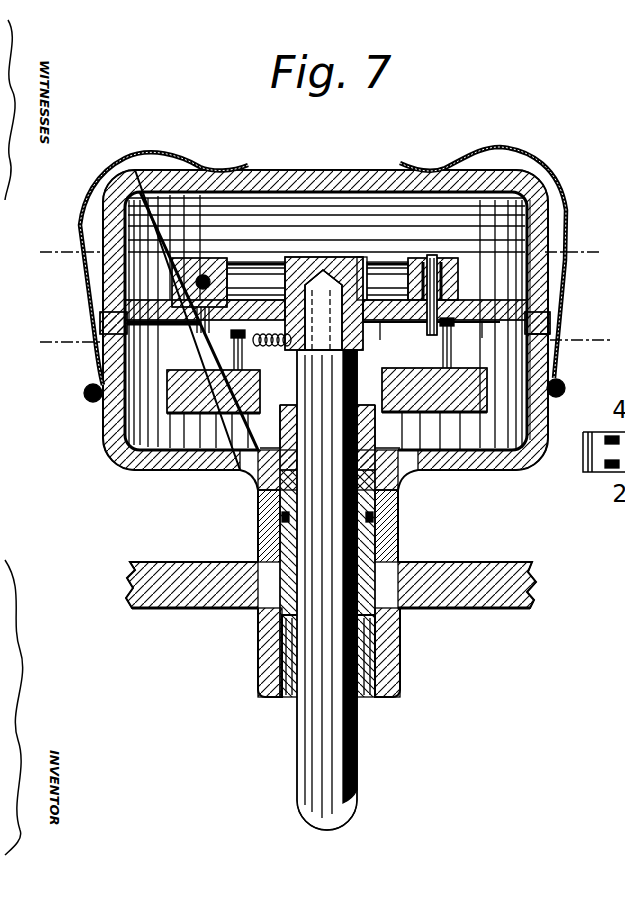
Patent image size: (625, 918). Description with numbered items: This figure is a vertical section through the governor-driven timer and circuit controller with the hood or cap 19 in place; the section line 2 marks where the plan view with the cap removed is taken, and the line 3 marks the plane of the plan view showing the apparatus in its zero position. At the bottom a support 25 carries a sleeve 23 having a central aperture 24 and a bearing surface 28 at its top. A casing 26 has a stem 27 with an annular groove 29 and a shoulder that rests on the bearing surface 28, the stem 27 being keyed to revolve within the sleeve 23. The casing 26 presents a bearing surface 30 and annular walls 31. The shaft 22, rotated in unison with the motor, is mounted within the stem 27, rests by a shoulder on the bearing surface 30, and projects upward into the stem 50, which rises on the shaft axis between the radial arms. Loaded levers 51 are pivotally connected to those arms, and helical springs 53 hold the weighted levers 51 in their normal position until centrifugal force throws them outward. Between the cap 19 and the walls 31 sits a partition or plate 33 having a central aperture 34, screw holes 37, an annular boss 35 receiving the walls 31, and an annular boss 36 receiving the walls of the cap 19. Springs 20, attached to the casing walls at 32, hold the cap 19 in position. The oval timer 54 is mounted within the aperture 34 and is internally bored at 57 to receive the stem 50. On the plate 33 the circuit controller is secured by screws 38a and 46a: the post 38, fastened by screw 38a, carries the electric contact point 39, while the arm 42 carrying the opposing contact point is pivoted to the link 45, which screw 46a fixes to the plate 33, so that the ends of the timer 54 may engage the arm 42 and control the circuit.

The section line 2 2 is at (316, 252).
The section line 3 is at (320, 339).
The hood or cap 19 is at (320, 170).
The springs 20 is at (133, 155).
The shaft 22 is at (358, 760).
The sleeve 23 is at (400, 672).
The central aperture 24 is at (366, 690).
The support 25 is at (156, 610).
The casing 26 is at (463, 470).
The stem 27 is at (370, 555).
The bearing surface 28 is at (400, 500).
The annular groove 29 is at (280, 518).
The bearing surface 30 is at (377, 455).
The annular walls 31 is at (548, 410).
The spring attachment point 32 is at (86, 402).
The partition or plate 33 is at (477, 342).
The central aperture 34 is at (383, 342).
The annular boss 35 is at (550, 344).
The annular boss 36 is at (102, 320).
The screw holes 37 is at (232, 338).
The post 38 is at (206, 272).
The screw 38a is at (195, 340).
The electric contact point 39 is at (232, 266).
The arm 42 is at (270, 260).
The link 45 is at (450, 258).
The screw 46a is at (422, 337).
The stem 50 is at (364, 258).
The loaded levers 51 is at (183, 412).
The helical springs 53 is at (262, 348).
The timer 54 is at (347, 257).
The bore 57 is at (321, 268).